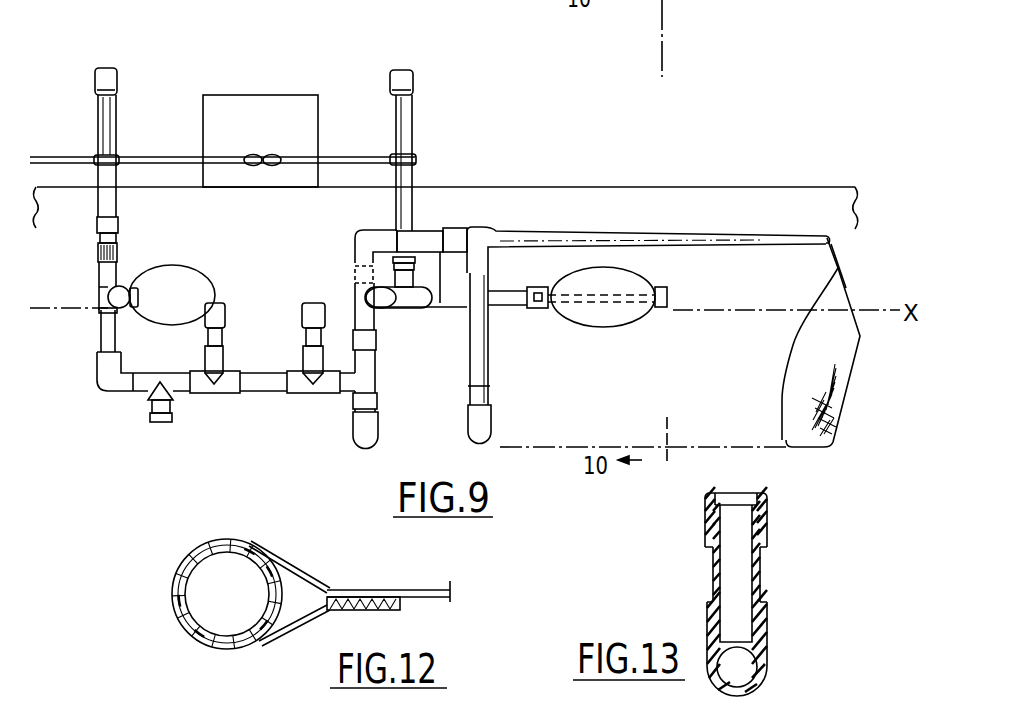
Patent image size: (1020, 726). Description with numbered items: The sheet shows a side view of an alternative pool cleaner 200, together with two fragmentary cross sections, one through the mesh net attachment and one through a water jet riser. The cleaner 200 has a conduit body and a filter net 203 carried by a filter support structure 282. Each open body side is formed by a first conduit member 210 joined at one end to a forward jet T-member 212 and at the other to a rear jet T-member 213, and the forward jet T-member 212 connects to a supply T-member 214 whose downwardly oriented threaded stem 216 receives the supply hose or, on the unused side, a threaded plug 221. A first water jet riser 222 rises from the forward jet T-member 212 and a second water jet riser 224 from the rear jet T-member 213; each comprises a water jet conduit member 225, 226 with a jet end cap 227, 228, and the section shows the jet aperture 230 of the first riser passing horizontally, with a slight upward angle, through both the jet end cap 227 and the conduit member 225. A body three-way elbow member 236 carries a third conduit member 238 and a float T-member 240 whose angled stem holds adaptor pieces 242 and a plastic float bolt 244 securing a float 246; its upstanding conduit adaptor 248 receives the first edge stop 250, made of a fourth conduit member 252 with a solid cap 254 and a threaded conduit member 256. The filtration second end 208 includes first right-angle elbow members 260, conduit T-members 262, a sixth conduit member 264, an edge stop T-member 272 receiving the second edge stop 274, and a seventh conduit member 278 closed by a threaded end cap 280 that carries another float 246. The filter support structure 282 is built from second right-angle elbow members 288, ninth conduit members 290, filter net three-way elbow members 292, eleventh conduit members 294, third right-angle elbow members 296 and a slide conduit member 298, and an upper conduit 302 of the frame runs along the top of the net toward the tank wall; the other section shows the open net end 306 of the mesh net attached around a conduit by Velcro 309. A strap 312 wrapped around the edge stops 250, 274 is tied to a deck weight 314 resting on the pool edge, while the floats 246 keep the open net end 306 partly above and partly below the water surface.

In FIG. 9, the pool cleaner 200 is at (736, 201).
In FIG. 9, the filter net 203 is at (796, 458).
In FIG. 9, the filtration second end 208 is at (377, 402).
In FIG. 9, the first conduit member 210 is at (264, 393).
In FIG. 9, the forward jet T-member 212 is at (204, 393).
In FIG. 13, the forward jet T-member 212 is at (768, 612).
In FIG. 9, the rear jet T-member 213 is at (322, 393).
In FIG. 9, the supply T-member 214 is at (143, 391).
In FIG. 9, the threaded stem 216 is at (150, 404).
In FIG. 9, the threaded plug 221 is at (156, 423).
In FIG. 9, the first water jet riser 222 is at (207, 336).
In FIG. 9, the second water jet riser 224 is at (305, 342).
In FIG. 9, the water jet conduit member 225 is at (207, 350).
In FIG. 13, the water jet conduit member 225 is at (761, 568).
In FIG. 9, the water jet conduit member 226 is at (306, 338).
In FIG. 9, the jet end cap 227 is at (210, 306).
In FIG. 13, the jet end cap 227 is at (768, 500).
In FIG. 9, the jet end cap 228 is at (305, 307).
In FIG. 13, the jet aperture 230 is at (754, 517).
In FIG. 9, the body three-way elbow member 236 is at (97, 382).
In FIG. 9, the third conduit member 238 is at (101, 341).
In FIG. 9, the float T-member 240 is at (99, 272).
In FIG. 9, the adaptor pieces 242 is at (128, 286).
In FIG. 9, the plastic float bolt 244 is at (668, 293).
In FIG. 9, the float 246 is at (152, 268).
In FIG. 9, the conduit adaptor 248 is at (98, 252).
In FIG. 9, the first edge stop 250 is at (86, 113).
In FIG. 9, the fourth conduit member 252 is at (98, 130).
In FIG. 9, the solid cap 254 is at (110, 68).
In FIG. 9, the threaded conduit member 256 is at (97, 222).
In FIG. 9, the first 90° elbow member 260 is at (378, 432).
In FIG. 9, the conduit T-member 262 is at (376, 375).
In FIG. 9, the sixth conduit member 264 is at (377, 346).
In FIG. 9, the edge stop T-member 272 is at (400, 306).
In FIG. 9, the second edge stop 274 is at (413, 110).
In FIG. 9, the seventh conduit member 278 is at (498, 291).
In FIG. 9, the threaded end cap 280 is at (540, 310).
In FIG. 12, the filter support structure 282 is at (193, 626).
In FIG. 9, the second 90° elbow member 288 is at (491, 425).
In FIG. 9, the ninth conduit member 290 is at (489, 366).
In FIG. 9, the filter net three-way elbow member 292 is at (450, 233).
In FIG. 9, the eleventh conduit member 294 is at (420, 230).
In FIG. 9, the third 90° elbow member 296 is at (380, 229).
In FIG. 9, the slide conduit member 298 is at (355, 276).
In FIG. 9, the pipe 302 is at (770, 233).
In FIG. 9, the open net end 306 is at (489, 392).
In FIG. 12, the open net end 306 is at (252, 549).
In FIG. 12, the Velcro 309 is at (401, 603).
In FIG. 9, the strap 312 is at (146, 156).
In FIG. 9, the deck weight 314 is at (248, 97).